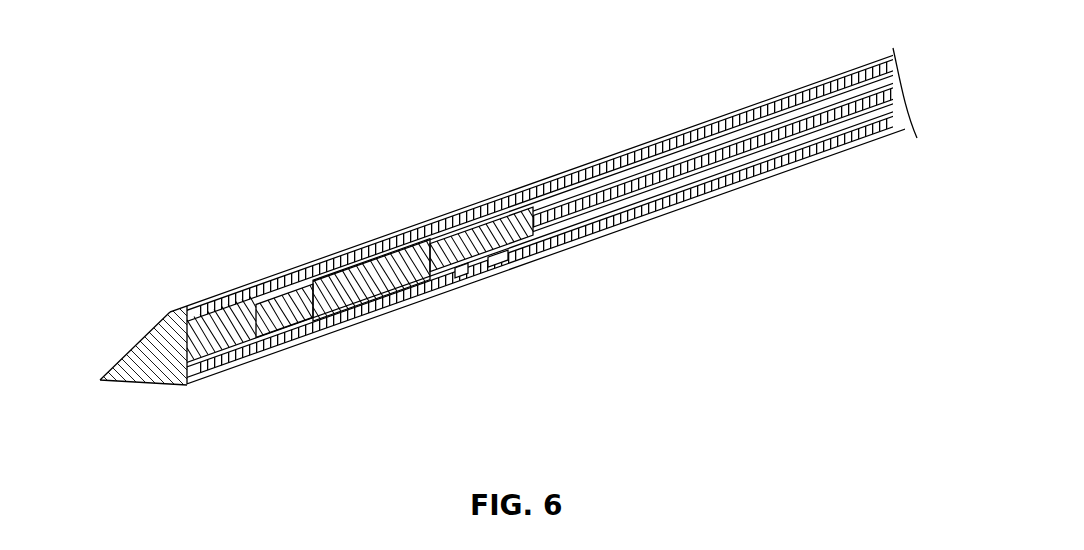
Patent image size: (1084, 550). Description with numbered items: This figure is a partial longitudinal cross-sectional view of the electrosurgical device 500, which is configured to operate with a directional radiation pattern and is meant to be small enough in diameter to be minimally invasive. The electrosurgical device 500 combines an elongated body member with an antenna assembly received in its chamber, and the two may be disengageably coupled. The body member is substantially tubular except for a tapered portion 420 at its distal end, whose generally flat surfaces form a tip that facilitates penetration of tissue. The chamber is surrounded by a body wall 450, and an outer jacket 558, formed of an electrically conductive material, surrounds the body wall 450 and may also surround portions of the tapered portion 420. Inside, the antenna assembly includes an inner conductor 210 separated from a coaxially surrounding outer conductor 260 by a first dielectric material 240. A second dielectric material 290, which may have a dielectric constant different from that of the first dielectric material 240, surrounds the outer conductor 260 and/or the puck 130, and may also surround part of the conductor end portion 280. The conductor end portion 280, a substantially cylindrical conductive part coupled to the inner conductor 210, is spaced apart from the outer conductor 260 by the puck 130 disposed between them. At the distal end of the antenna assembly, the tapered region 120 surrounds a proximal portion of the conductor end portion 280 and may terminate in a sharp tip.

The electrosurgical device 500 is at (350, 57).
The tapered portion 420 is at (140, 334).
The tapered region 120 is at (229, 335).
The outer jacket 558 is at (572, 172).
The conductor end portion 280 is at (344, 290).
The puck 130 is at (482, 219).
The first dielectric material 240 is at (783, 127).
The outer conductor 260 is at (824, 123).
The body wall 450 is at (735, 191).
The inner conductor 210 is at (597, 213).
The second dielectric material 290 is at (458, 274).